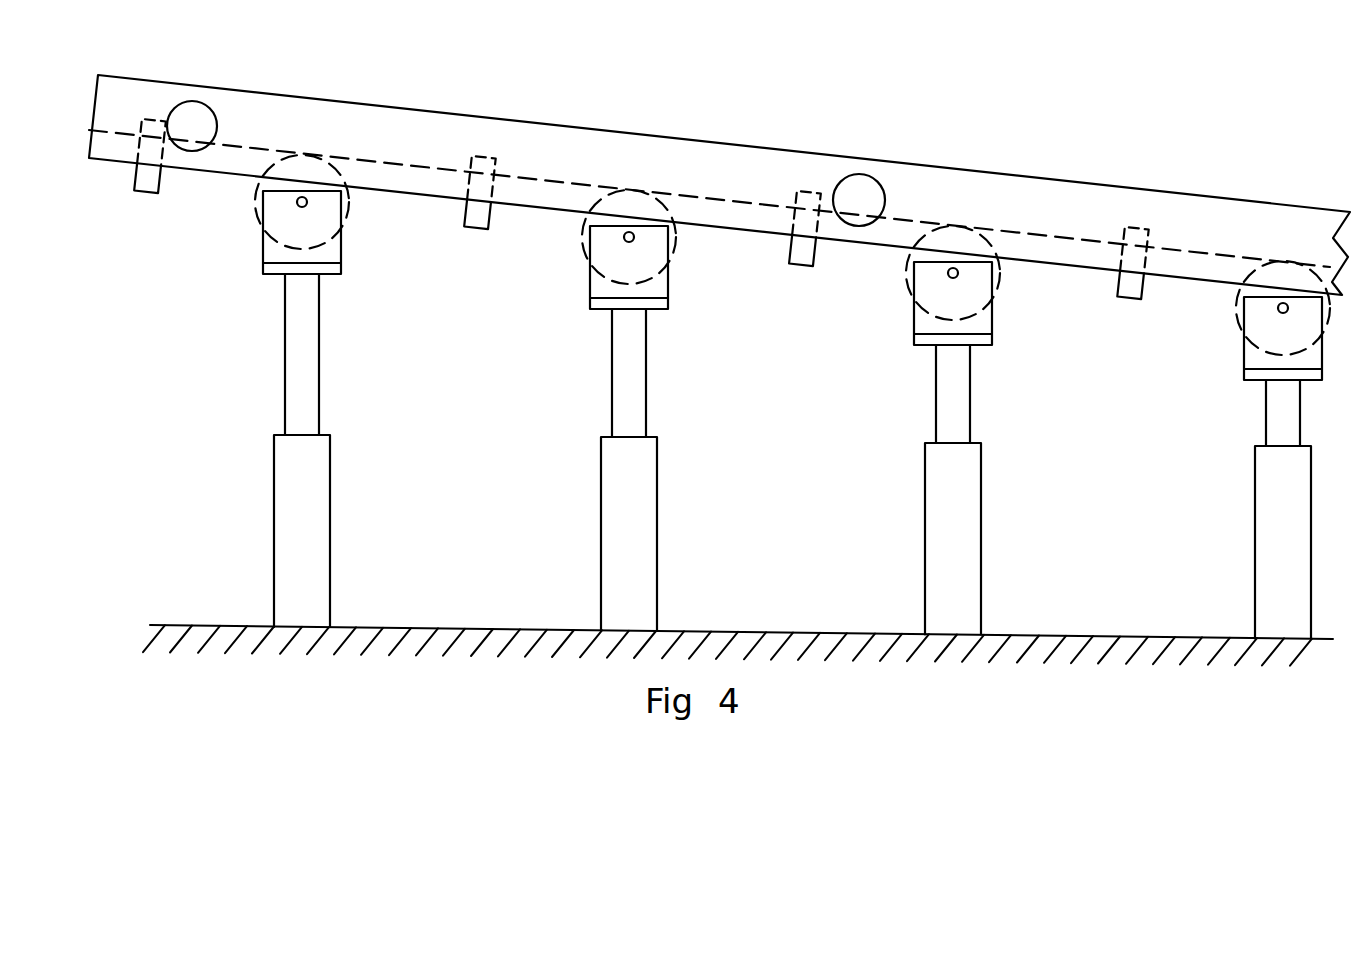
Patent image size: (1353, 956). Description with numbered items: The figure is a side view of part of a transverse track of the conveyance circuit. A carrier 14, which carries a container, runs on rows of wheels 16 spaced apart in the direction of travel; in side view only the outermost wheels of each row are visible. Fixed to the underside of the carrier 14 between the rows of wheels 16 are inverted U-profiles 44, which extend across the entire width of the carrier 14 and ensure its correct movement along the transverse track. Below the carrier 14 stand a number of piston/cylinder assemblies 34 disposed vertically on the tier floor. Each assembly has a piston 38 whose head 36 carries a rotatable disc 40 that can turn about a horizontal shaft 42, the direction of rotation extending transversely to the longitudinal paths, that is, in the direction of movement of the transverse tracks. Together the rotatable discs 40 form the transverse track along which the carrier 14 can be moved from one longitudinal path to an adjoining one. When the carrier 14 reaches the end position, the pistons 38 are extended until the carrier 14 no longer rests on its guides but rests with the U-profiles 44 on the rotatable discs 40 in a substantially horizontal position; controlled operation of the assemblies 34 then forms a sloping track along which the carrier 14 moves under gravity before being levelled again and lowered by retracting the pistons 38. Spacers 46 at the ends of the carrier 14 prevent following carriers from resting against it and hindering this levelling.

The carrier 14 is at (363, 102).
The inverted U-profiles 44 is at (587, 183).
The wheels 16 is at (472, 230).
The spacers 46 is at (195, 153).
The rotatable disc 40 is at (348, 203).
The horizontal shaft 42 is at (295, 203).
The head 36 is at (332, 275).
The piston 38 is at (318, 405).
The piston/cylinder assemblies 34 is at (648, 462).